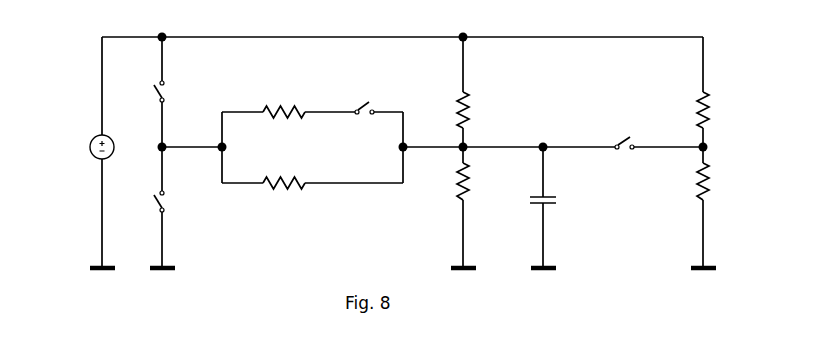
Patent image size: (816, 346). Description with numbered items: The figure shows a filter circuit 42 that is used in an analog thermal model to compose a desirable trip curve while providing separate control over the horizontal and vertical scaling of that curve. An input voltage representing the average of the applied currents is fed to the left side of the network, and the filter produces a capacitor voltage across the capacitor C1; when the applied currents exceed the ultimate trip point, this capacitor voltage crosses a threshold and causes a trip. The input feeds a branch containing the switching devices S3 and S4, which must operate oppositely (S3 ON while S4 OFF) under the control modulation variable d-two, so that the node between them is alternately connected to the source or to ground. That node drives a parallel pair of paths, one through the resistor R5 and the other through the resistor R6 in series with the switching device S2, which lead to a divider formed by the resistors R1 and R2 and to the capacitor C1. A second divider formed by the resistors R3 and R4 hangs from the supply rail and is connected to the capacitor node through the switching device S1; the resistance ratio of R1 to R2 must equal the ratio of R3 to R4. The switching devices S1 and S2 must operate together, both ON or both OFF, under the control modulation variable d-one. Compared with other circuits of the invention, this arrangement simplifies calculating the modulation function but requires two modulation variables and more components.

The filter circuit 42 is at (389, 169).
The resistor R1 is at (478, 110).
The resistor R2 is at (478, 181).
The resistor R3 is at (688, 110).
The resistor R4 is at (688, 181).
The resistor R5 is at (284, 174).
The resistor R6 is at (284, 100).
The switching device S1 is at (625, 134).
The switching device S2 is at (362, 98).
The switching device S3 is at (146, 91).
The switching device S4 is at (146, 201).
The capacitor C1 is at (533, 208).